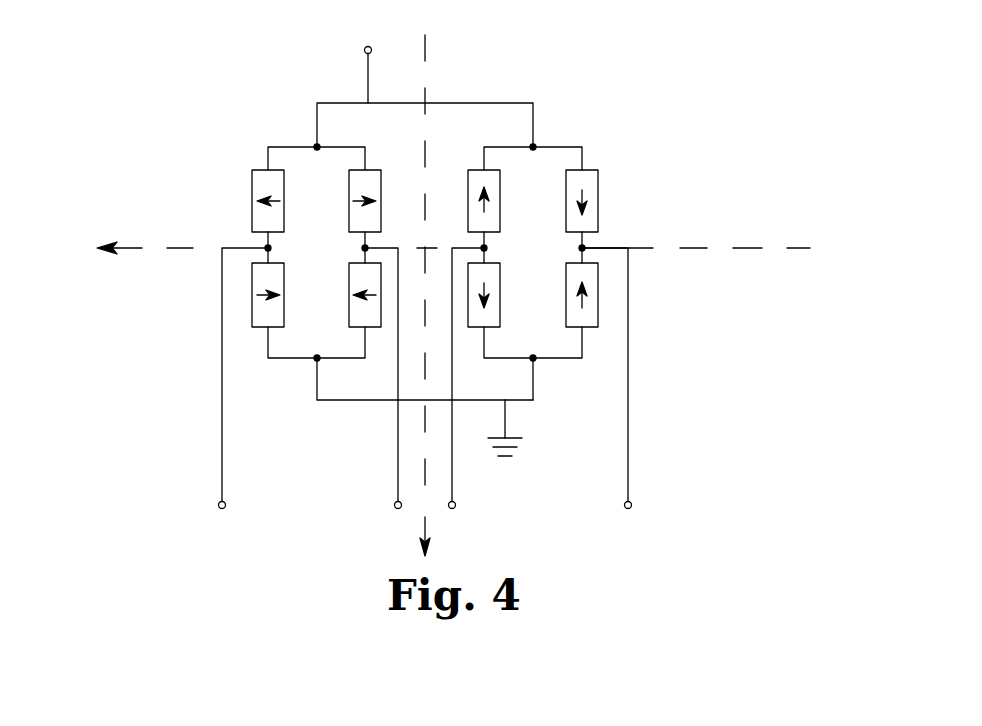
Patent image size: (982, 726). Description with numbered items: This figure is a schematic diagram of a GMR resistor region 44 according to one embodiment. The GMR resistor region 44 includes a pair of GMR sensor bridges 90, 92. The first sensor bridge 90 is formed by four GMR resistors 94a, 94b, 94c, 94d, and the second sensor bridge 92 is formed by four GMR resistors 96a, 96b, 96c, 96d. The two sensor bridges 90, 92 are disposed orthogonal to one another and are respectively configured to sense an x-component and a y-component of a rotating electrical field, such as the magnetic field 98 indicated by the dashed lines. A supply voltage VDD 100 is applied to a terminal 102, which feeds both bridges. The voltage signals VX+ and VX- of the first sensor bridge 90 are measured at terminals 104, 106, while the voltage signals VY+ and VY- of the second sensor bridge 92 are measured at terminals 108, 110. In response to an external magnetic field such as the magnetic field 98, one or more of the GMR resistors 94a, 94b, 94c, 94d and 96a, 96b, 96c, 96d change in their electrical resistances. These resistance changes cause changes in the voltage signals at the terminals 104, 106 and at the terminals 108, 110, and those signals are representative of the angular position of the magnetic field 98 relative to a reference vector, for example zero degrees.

The GMR resistor region 44 is at (692, 54).
The GMR sensor bridge 90 is at (208, 131).
The GMR sensor bridge 92 is at (662, 115).
The GMR resistor 94a is at (252, 195).
The GMR resistor 94b is at (381, 195).
The GMR resistor 94c is at (255, 329).
The GMR resistor 94d is at (375, 329).
The GMR resistor 96a is at (468, 195).
The GMR resistor 96b is at (598, 190).
The GMR resistor 96c is at (478, 329).
The GMR resistor 96d is at (590, 329).
The magnetic field 98 is at (737, 249).
The supply voltage VDD 100 is at (302, 52).
The terminal 102 is at (510, 103).
The terminal 104 is at (222, 489).
The terminal 106 is at (397, 489).
The terminal 108 is at (453, 489).
The terminal 110 is at (629, 489).